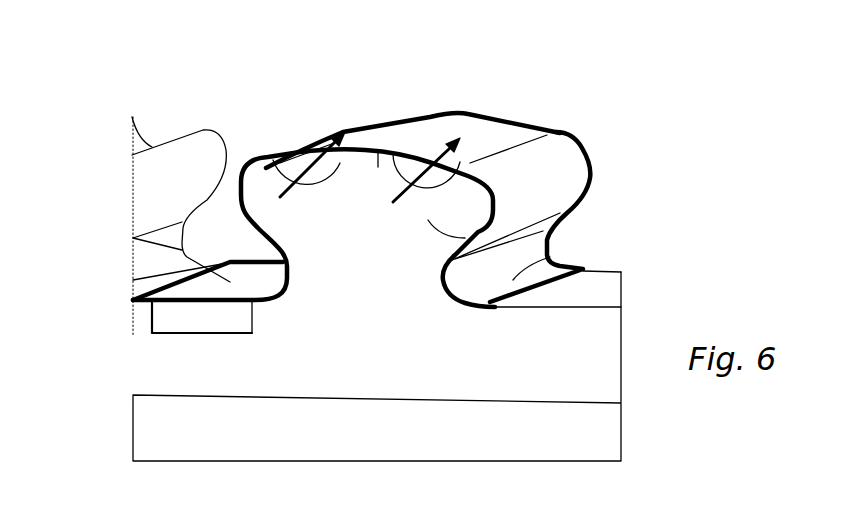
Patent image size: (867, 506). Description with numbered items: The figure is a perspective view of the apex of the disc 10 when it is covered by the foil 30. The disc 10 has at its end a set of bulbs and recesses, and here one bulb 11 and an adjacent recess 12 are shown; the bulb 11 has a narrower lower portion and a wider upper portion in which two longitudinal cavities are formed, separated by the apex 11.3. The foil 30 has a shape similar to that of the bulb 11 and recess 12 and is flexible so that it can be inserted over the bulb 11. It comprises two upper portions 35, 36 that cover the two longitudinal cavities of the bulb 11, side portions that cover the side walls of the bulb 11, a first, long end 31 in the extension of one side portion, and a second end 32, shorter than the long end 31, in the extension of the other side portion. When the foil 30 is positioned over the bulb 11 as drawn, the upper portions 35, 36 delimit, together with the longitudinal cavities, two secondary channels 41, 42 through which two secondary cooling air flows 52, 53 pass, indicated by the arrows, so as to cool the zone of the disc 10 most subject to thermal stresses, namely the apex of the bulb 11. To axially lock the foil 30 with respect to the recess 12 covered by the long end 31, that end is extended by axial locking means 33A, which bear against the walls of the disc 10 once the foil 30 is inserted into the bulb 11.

The disc 10 is at (162, 363).
The recess 12 is at (603, 293).
The axial locking means 33A is at (182, 317).
The upper portion 35 is at (361, 140).
The upper portion 36 is at (487, 133).
The foil 30 is at (553, 172).
The bulb 11 is at (560, 213).
The second end 32 is at (550, 257).
The first, long end 31 is at (133, 238).
The secondary channel 41 is at (307, 163).
The secondary channel 42 is at (413, 170).
The secondary cooling air flow 52 is at (277, 160).
The secondary cooling air flow 53 is at (547, 135).
The apex 11.3 is at (378, 167).